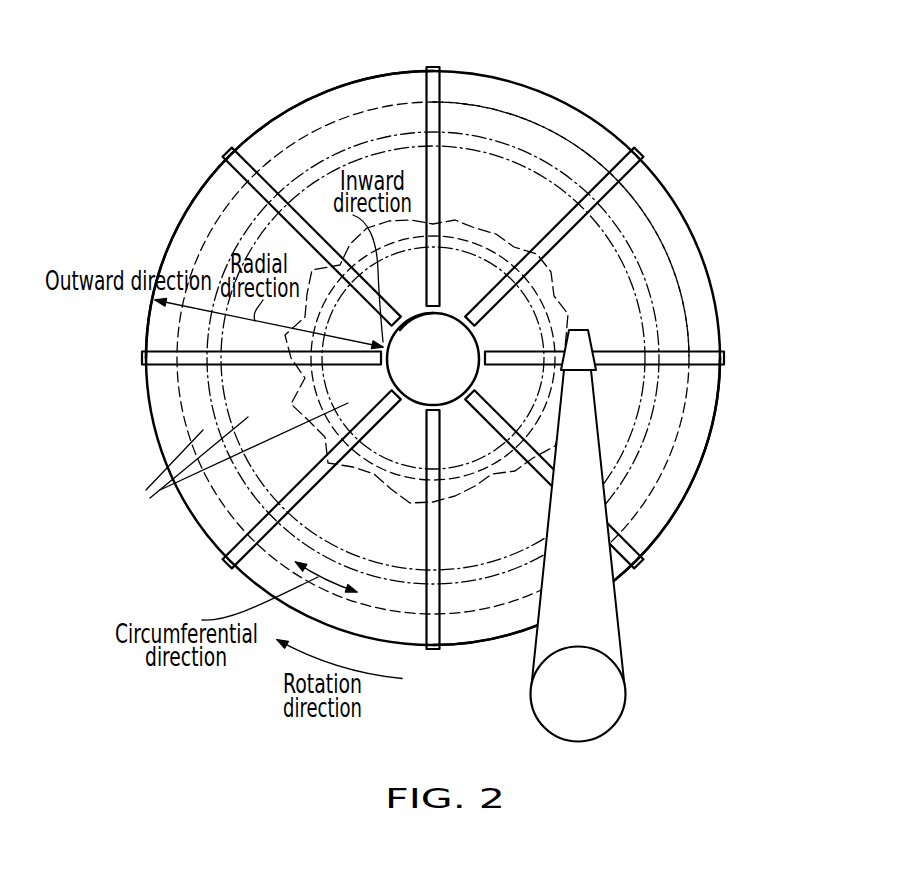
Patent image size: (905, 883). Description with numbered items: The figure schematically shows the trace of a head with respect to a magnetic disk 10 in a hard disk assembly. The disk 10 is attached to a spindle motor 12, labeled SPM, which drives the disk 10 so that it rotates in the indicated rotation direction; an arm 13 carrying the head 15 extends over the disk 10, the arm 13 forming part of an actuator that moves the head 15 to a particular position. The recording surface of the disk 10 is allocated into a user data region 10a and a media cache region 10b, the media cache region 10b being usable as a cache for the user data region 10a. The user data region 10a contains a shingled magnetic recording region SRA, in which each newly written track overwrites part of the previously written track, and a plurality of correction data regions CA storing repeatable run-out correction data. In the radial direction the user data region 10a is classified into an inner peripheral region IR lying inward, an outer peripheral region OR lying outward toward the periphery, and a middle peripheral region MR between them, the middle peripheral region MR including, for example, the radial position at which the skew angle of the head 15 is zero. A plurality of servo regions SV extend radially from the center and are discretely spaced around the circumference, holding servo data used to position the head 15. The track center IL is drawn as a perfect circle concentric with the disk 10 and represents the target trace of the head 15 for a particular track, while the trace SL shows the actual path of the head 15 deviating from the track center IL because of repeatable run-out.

The magnetic disk 10 is at (707, 273).
The user data region 10a is at (323, 143).
The media cache region 10b is at (696, 470).
The spindle motor 12 is at (421, 316).
The arm 13 is at (620, 631).
The head 15 is at (584, 328).
The servo region SV is at (436, 67).
The spindle motor SPM is at (433, 359).
The middle peripheral region MR is at (458, 193).
The outer peripheral region OR is at (505, 138).
The inner peripheral region IR is at (463, 285).
The trace of the head SL is at (540, 153).
The track center IL is at (603, 150).
The correction data region CA is at (540, 310).
The shingled magnetic recording region SRA is at (224, 464).